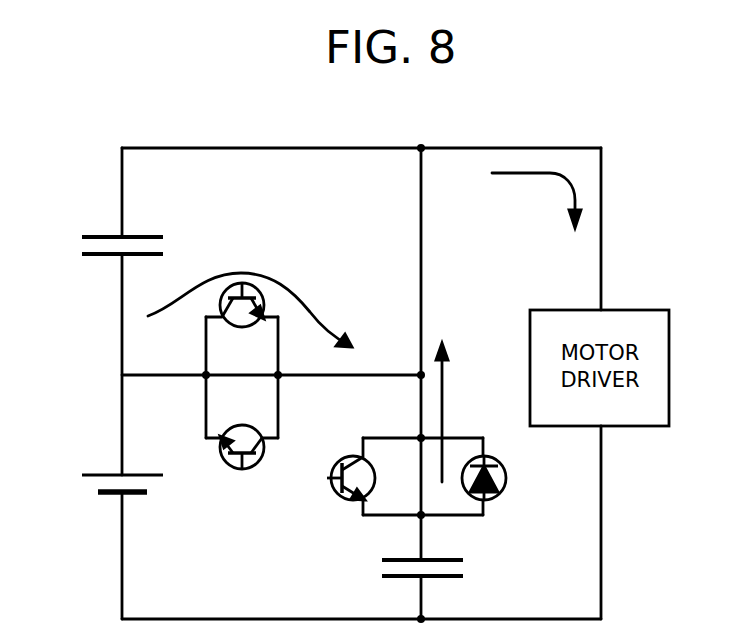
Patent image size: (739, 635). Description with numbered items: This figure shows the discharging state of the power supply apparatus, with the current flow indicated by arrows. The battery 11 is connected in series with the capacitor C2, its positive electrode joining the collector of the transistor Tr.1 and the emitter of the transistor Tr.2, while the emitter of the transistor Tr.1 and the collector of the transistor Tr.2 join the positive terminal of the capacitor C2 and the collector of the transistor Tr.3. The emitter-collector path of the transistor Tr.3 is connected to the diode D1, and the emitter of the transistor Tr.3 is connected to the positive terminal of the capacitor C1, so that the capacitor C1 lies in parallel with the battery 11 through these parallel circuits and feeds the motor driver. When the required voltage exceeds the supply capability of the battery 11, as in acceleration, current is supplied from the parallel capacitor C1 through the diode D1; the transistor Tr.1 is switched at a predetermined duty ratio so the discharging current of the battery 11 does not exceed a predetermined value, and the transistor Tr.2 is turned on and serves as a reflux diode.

The capacitor C2 is at (128, 226).
The transistor Tr.1 is at (240, 280).
The transistor Tr.2 is at (237, 468).
The transistor Tr.3 is at (343, 504).
The diode D1 is at (495, 461).
The capacitor C1 is at (444, 569).
The battery 11 is at (93, 487).